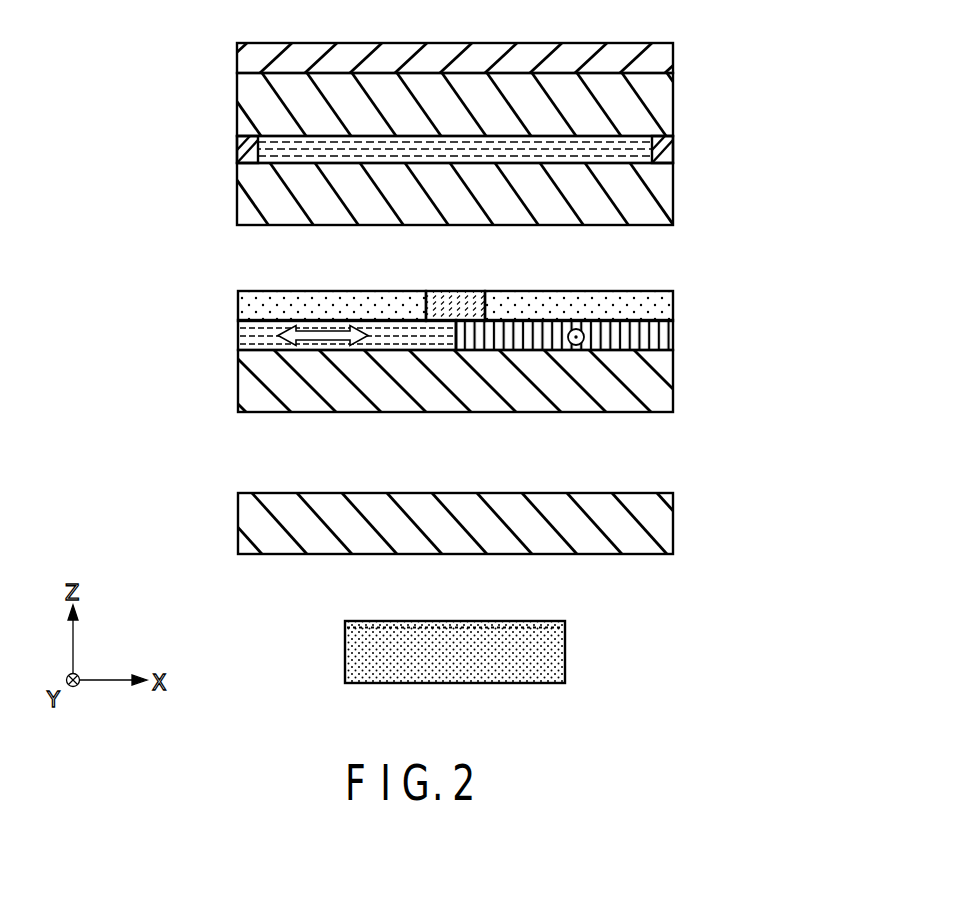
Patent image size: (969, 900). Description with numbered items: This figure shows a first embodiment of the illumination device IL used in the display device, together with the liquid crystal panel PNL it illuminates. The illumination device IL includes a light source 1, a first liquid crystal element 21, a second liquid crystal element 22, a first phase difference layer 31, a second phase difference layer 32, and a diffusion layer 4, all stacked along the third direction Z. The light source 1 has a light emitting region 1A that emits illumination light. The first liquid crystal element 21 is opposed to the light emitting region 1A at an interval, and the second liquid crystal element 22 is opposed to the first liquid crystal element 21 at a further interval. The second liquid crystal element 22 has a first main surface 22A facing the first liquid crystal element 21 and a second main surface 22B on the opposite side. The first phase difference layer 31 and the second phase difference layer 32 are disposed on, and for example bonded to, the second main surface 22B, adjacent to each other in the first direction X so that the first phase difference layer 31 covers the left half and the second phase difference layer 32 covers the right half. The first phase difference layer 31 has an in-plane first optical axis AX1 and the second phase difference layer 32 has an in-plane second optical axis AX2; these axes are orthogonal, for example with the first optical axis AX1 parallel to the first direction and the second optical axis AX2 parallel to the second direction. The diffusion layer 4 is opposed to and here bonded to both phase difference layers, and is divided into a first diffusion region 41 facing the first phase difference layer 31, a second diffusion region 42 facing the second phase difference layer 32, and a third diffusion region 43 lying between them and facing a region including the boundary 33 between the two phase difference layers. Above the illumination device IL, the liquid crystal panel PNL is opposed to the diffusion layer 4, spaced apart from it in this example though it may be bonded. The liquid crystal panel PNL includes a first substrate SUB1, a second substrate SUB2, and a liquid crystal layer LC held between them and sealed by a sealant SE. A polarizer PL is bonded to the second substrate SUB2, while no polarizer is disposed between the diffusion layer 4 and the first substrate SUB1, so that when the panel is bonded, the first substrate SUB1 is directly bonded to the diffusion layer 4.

The polarizer PL is at (258, 58).
The liquid crystal panel PNL is at (465, 133).
The second substrate SUB2 is at (662, 93).
The liquid crystal layer LC is at (637, 146).
The sealant SE is at (658, 151).
The first substrate SUB1 is at (660, 195).
The diffusion layer 4 is at (434, 283).
The first diffusion region 41 is at (360, 298).
The second diffusion region 42 is at (605, 298).
The third diffusion region 43 is at (472, 298).
The first phase difference layer 31 is at (319, 390).
The second phase difference layer 32 is at (599, 389).
The boundary 33 is at (456, 319).
The first optical axis AX1 is at (313, 338).
The second optical axis AX2 is at (576, 346).
The second liquid crystal element 22 is at (427, 396).
The first main surface 22A is at (437, 412).
The second main surface 22B is at (513, 336).
The first liquid crystal element 21 is at (250, 522).
The light source 1 is at (468, 652).
The light emitting region 1A is at (488, 639).
The illumination device IL is at (494, 472).